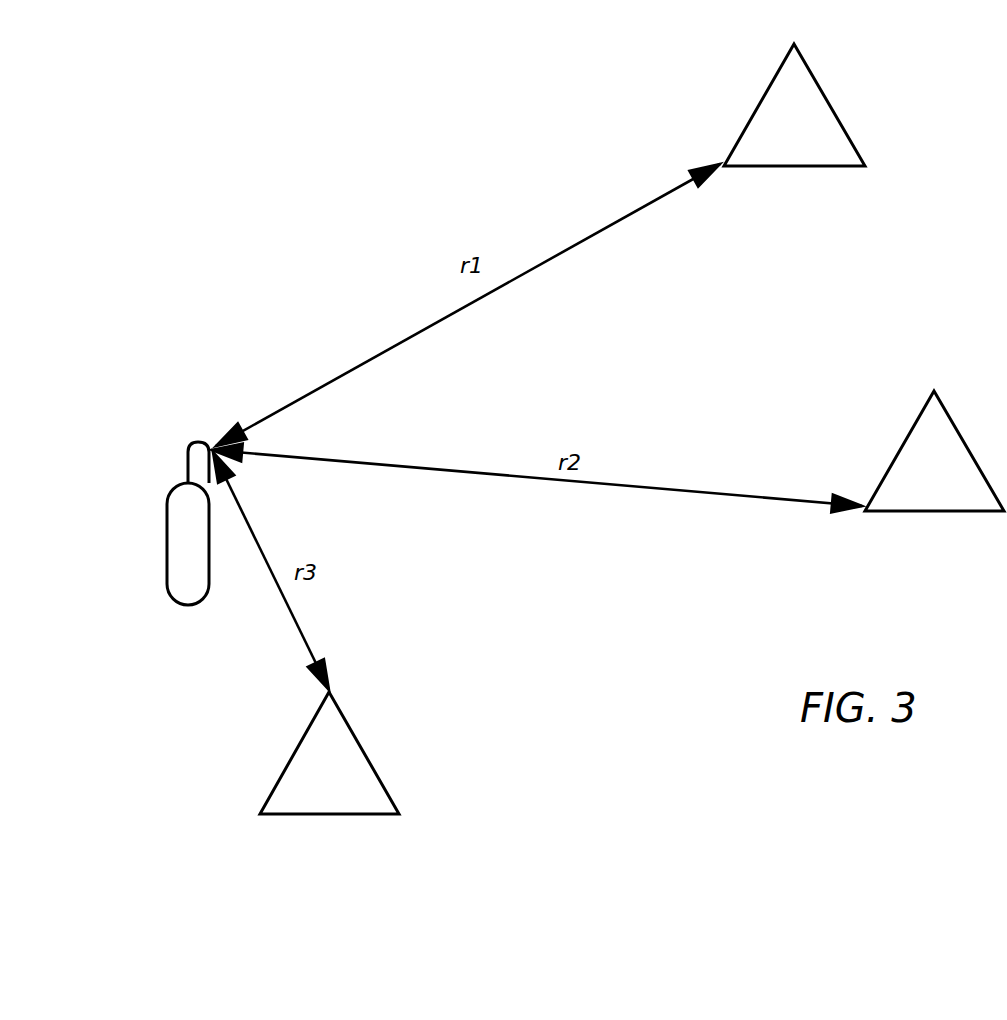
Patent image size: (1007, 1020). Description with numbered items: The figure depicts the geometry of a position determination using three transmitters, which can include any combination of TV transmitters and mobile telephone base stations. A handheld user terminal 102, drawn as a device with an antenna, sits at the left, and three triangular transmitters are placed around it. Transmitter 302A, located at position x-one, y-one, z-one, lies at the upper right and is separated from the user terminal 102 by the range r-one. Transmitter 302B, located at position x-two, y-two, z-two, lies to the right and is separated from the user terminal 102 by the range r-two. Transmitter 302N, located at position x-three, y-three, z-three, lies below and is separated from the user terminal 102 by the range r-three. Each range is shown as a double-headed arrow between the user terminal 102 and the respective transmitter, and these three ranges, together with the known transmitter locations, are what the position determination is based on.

The user terminal 102 is at (167, 543).
The transmitter 302A is at (794, 105).
The transmitter 302B is at (934, 451).
The transmitter 302N is at (329, 753).